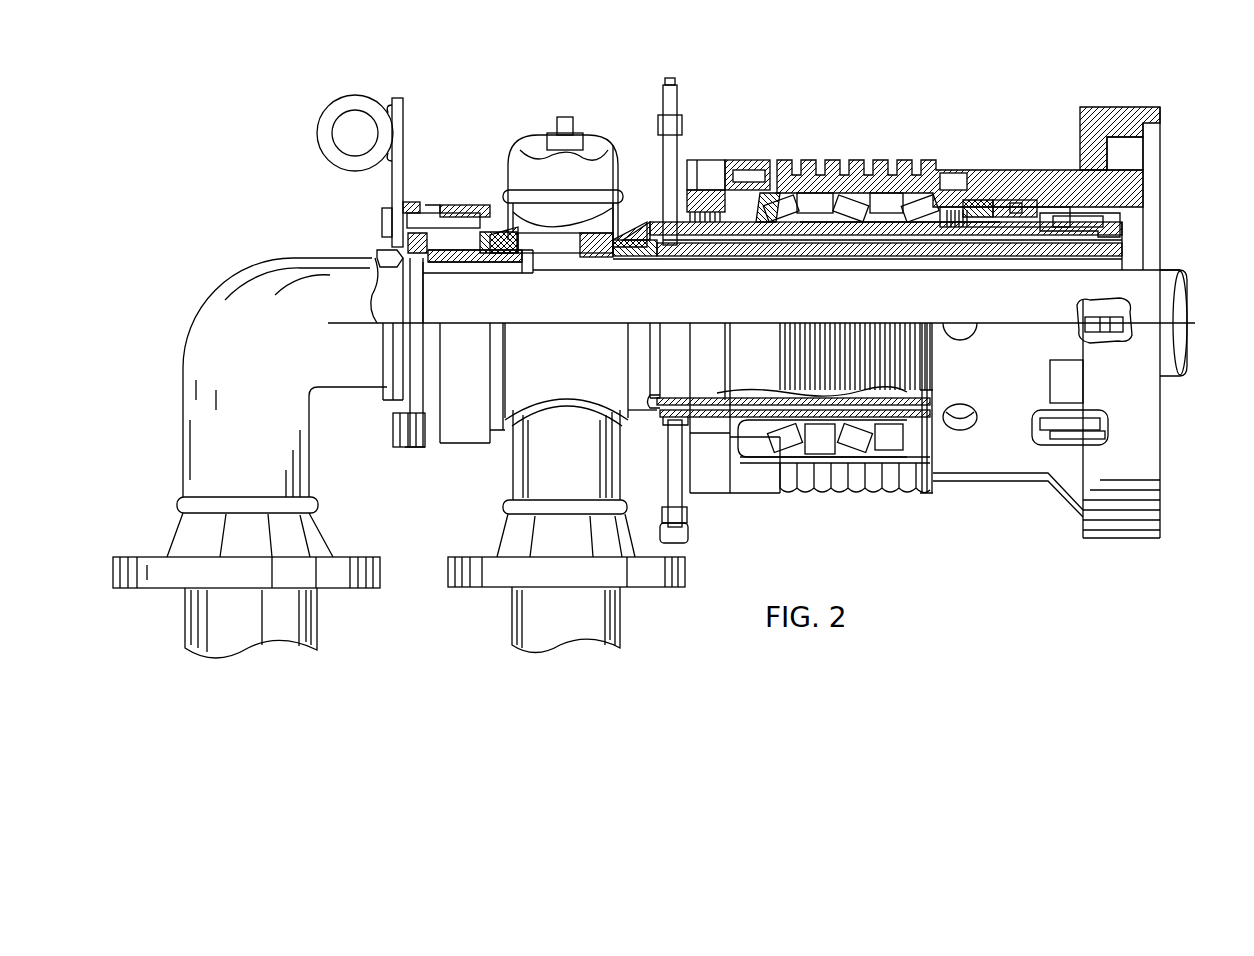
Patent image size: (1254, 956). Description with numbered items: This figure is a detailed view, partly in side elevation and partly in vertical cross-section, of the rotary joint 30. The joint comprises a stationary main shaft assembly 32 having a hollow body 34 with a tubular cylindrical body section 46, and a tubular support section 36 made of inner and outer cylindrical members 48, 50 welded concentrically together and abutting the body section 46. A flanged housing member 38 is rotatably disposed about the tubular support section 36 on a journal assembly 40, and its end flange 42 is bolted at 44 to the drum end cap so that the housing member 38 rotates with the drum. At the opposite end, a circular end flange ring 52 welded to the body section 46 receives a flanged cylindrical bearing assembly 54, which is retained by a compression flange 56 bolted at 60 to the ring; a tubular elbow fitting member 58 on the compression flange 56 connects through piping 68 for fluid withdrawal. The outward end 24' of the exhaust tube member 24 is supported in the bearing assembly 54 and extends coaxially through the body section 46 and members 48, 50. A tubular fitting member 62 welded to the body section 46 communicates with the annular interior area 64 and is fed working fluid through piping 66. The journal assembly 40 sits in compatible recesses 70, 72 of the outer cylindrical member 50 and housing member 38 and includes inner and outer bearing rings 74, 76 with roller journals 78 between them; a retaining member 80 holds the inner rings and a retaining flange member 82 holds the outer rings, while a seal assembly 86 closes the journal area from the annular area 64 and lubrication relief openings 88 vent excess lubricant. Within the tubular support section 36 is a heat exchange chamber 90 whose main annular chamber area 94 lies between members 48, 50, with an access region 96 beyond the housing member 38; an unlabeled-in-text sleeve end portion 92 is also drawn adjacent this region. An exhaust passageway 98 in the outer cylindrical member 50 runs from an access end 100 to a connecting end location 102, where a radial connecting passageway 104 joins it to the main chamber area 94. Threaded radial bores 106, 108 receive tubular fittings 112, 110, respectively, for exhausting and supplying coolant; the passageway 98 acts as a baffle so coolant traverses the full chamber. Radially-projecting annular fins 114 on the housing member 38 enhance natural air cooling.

The exhaust tube member 24 is at (879, 323).
The outward end of the exhaust tube member 24' is at (478, 346).
The rotary joint 30 is at (497, 118).
The main shaft assembly 32 is at (637, 230).
The hollow body 34 is at (523, 425).
The tubular support section 36 is at (1125, 240).
The flanged housing member 38 is at (1010, 170).
The journal assembly 40 is at (752, 212).
The end flange 42 is at (1077, 113).
The bolts 44 is at (1130, 140).
The tubular cylindrical body section 46 is at (553, 361).
The inner cylindrical member 48 is at (867, 262).
The outer cylindrical member 50 is at (927, 257).
The circular end flange ring 52 is at (478, 207).
The flanged cylindrical bearing assembly 54 is at (508, 260).
The compression flange 56 is at (385, 248).
The tubular elbow fitting member 58 is at (270, 318).
The bolts 60 is at (380, 225).
The tubular fitting member 62 is at (551, 484).
The annular interior area 64 is at (605, 275).
The piping 66 is at (625, 605).
The piping 68 is at (320, 615).
The recess 70 is at (770, 225).
The recess 72 is at (1040, 195).
The inner annular bearing rings 74 is at (870, 205).
The outer annular bearing rings 76 is at (843, 200).
The roller journals 78 is at (812, 205).
The retaining member 80 is at (970, 200).
The retaining flange member 82 is at (705, 170).
The seal assembly 86 is at (1025, 215).
The lubrication relief openings 88 is at (950, 178).
The heat exchange chamber 90 is at (730, 430).
The sleeve end 92 is at (670, 240).
The main annular chamber area 94 is at (820, 255).
The access region 96 is at (688, 230).
The exhaust passageway 98 is at (770, 395).
The access end 100 is at (625, 412).
The connecting end location 102 is at (930, 425).
The radial connecting passageway 104 is at (920, 393).
The radial threaded bore 106 is at (668, 437).
The threaded radial bore 108 is at (650, 255).
The tubular fitting 110 is at (663, 140).
The tubular fitting 112 is at (690, 500).
The radially-projecting annular fins 114 is at (858, 490).